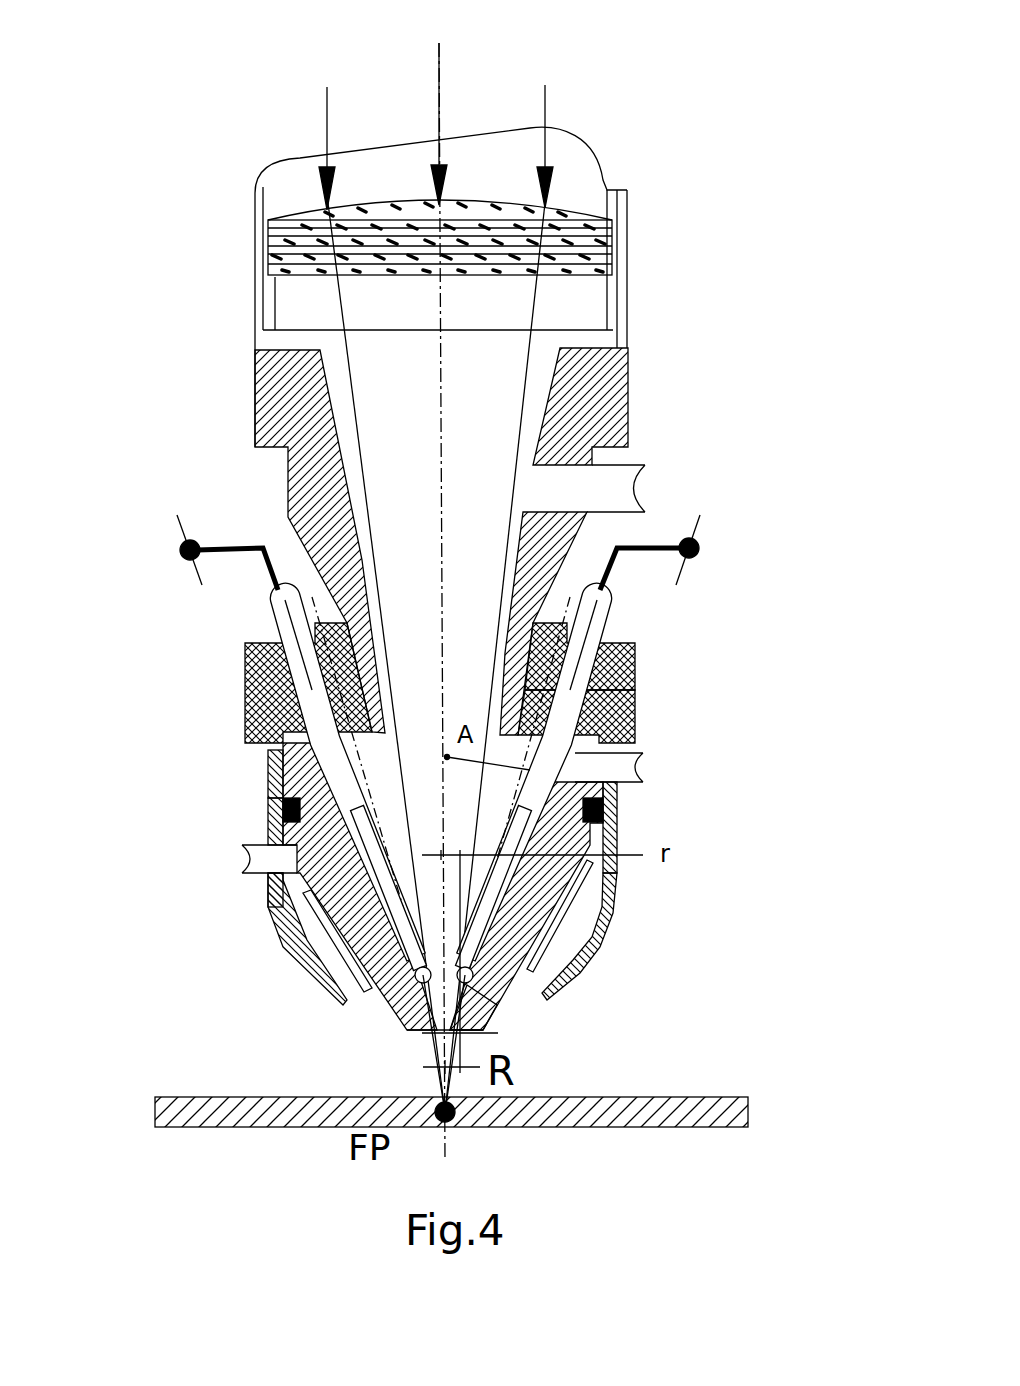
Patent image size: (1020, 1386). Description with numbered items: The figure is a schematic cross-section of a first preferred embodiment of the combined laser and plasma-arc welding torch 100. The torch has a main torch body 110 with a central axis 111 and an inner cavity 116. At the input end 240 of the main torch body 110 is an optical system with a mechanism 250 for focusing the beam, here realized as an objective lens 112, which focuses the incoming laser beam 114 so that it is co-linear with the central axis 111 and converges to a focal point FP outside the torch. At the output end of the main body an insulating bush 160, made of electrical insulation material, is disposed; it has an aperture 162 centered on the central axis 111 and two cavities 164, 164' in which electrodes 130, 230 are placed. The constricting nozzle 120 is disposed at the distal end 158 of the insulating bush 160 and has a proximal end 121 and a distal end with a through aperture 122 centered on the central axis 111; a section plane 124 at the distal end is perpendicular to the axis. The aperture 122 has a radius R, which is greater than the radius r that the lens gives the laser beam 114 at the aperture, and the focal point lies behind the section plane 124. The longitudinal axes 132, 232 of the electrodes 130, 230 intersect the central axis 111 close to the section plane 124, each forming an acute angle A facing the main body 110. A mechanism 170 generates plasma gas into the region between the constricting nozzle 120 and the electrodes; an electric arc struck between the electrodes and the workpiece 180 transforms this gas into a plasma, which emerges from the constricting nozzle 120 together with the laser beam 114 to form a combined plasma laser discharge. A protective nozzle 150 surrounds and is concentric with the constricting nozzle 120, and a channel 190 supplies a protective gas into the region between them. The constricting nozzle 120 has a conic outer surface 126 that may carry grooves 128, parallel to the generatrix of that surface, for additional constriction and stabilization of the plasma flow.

The welding torch 100 is at (293, 498).
The main torch body 110 is at (340, 577).
The central axis 111 is at (440, 88).
The objective lens 112 is at (262, 244).
The laser beam 114 is at (546, 107).
The inner cavity 116 is at (393, 422).
The constricting nozzle 120 is at (557, 962).
The proximal end 121 is at (273, 790).
The through aperture 122 is at (400, 1025).
The section plane 124 is at (385, 1035).
The conic outer surface 126 is at (617, 875).
The grooves 128 is at (350, 977).
The electrode 130 is at (560, 823).
The longitudinal axis 132 is at (575, 665).
The protective nozzle 150 is at (610, 927).
The distal end 158 is at (633, 728).
The insulating bush 160 is at (633, 675).
The aperture 162 is at (420, 718).
The cavity 164 is at (700, 712).
The cavity 164' is at (156, 759).
The plasma gas generating mechanism 170 is at (603, 484).
The workpiece 180 is at (727, 1107).
The channel 190 is at (297, 853).
The electrode 230 is at (390, 890).
The longitudinal axis 232 is at (340, 672).
The input end 240 is at (580, 165).
The focusing mechanism 250 is at (612, 312).